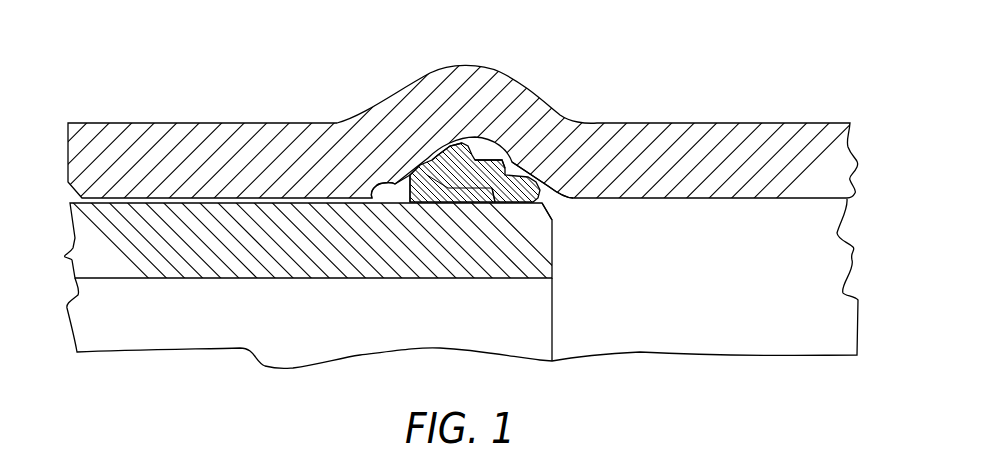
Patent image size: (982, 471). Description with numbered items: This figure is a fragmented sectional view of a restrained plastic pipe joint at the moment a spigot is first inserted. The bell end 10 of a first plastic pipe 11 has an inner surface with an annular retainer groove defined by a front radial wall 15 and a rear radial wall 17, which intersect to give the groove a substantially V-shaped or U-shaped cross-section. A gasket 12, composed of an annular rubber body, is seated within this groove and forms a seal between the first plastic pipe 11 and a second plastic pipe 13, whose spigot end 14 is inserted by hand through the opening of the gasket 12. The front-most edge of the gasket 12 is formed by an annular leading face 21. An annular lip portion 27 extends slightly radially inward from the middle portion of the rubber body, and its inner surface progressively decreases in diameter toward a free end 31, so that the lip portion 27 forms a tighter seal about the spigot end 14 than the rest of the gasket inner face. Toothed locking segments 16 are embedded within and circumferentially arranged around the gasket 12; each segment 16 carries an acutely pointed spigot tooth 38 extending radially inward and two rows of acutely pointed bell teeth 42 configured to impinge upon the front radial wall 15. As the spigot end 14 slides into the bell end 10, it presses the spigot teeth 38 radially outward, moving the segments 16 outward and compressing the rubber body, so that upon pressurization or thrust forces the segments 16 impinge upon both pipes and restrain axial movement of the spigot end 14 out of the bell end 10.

The bell end 10 is at (168, 123).
The first plastic pipe 11 is at (712, 68).
The gasket 12 is at (478, 157).
The second plastic pipe 13 is at (175, 278).
The spigot end 14 is at (552, 258).
The front radial wall 15 is at (372, 190).
The toothed locking segment 16 is at (433, 155).
The rear radial wall 17 is at (507, 158).
The leading face 21 is at (397, 192).
The lip portion 27 is at (537, 173).
The free end 31 is at (547, 202).
The spigot tooth 38 is at (497, 203).
The bell teeth 42 is at (408, 172).